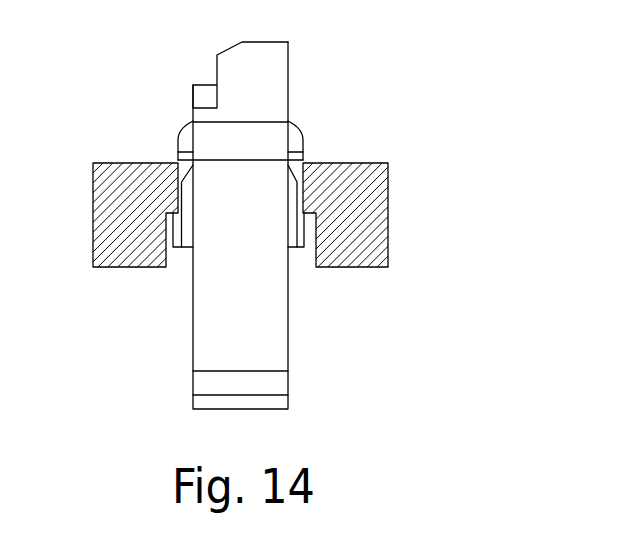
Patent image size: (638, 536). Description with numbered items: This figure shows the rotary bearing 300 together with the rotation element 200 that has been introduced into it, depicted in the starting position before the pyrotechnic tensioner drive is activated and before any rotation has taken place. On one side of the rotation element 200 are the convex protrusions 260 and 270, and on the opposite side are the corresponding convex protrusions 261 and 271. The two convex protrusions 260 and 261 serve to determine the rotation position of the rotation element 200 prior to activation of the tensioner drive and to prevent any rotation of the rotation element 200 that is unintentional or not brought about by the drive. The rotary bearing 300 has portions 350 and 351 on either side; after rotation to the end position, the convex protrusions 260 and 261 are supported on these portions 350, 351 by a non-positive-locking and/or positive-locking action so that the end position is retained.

The rotation element 200 is at (272, 363).
The convex protrusion 260 is at (184, 247).
The convex protrusion 261 is at (293, 247).
The convex protrusion 270 is at (192, 120).
The convex protrusion 271 is at (293, 118).
The rotary bearing 300 is at (402, 278).
The portion of the rotary bearing 350 is at (140, 163).
The portion of the rotary bearing 351 is at (347, 163).